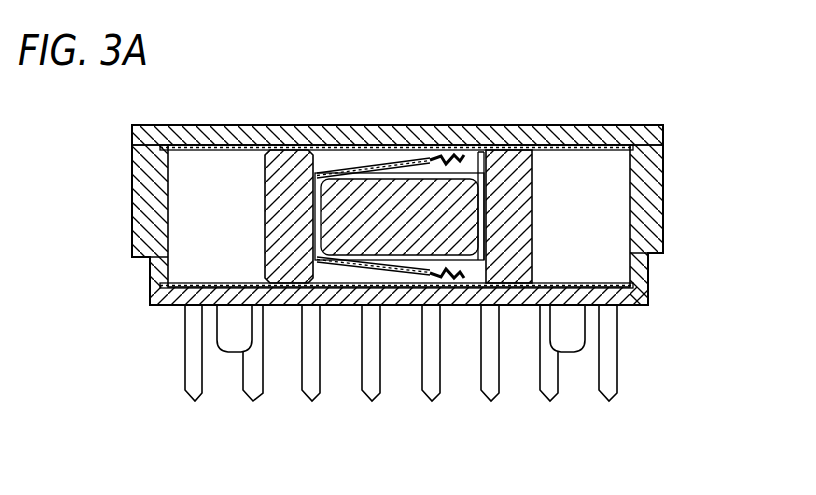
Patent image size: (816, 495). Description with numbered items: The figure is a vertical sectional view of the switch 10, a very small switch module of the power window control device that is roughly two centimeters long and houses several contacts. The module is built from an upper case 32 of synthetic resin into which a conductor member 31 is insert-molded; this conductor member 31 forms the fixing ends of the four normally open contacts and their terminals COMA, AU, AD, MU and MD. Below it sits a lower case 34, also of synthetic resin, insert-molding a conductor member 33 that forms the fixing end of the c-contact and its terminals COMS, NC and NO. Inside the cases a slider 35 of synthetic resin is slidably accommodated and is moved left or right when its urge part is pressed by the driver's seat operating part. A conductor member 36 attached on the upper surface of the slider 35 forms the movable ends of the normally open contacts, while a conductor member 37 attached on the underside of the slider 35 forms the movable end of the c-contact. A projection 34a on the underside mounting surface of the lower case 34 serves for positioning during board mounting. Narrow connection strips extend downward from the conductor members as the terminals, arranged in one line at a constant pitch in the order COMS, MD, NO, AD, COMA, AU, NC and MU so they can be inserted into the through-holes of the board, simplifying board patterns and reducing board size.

The switch 10 is at (450, 279).
The conductor member 31 is at (583, 151).
The upper case 32 is at (584, 140).
The conductor member 33 is at (582, 284).
The lower case 34 is at (640, 266).
The projection 34a is at (575, 352).
The slider 35 is at (268, 212).
The conductor member 36 is at (394, 166).
The conductor member 37 is at (401, 286).
The second common terminal COMS is at (193, 403).
The opening signal terminal MD is at (254, 403).
The normally open terminal NO is at (312, 403).
The auto opening signal terminal AD is at (372, 403).
The first common terminal COMA is at (430, 403).
The auto closing signal terminal AU is at (490, 403).
The normally close terminal NC is at (549, 403).
The closing signal terminal MU is at (608, 403).